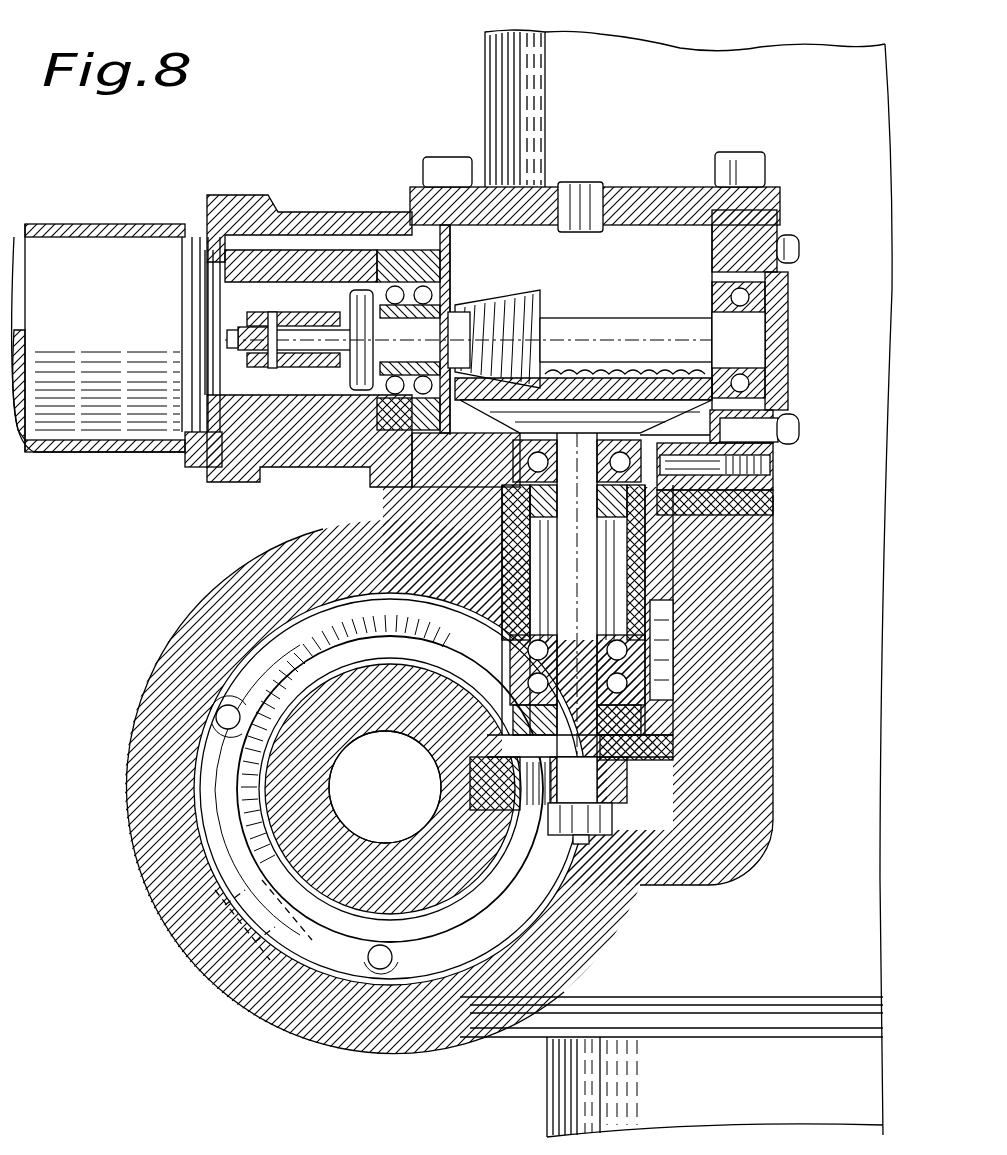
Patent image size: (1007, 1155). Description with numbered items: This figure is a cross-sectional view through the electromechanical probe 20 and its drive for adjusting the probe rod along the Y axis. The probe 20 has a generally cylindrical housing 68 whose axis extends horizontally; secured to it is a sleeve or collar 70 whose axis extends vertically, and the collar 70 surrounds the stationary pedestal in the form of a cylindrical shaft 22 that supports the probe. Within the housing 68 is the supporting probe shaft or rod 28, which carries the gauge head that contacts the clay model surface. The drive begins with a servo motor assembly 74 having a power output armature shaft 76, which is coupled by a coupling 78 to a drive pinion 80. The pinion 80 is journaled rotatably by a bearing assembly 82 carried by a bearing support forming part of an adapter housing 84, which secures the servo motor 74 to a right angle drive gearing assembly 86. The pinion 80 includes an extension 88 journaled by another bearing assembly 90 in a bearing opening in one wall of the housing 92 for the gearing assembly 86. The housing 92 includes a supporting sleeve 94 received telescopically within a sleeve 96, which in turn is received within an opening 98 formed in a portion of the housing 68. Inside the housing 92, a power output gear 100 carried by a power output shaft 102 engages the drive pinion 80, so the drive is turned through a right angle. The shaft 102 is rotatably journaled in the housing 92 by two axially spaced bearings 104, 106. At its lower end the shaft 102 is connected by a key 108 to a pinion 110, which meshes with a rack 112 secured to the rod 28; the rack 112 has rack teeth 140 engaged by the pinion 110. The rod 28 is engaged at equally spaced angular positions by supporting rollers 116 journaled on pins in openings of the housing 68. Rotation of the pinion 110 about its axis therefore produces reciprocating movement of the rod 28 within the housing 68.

The electromechanical probe 20 is at (197, 973).
The cylindrical shaft 22 is at (577, 1077).
The probe shaft or rod 28 is at (282, 793).
The housing 68 is at (730, 850).
The sleeve or collar 70 is at (500, 100).
The servo motor assembly 74 is at (60, 252).
The power output armature shaft 76 is at (235, 325).
The coupling 78 is at (285, 322).
The drive pinion 80 is at (500, 302).
The bearing assembly 82 is at (392, 250).
The adapter housing 84 is at (252, 195).
The right angle drive gearing assembly 86 is at (642, 188).
The extension 88 is at (622, 372).
The bearing assembly 90 is at (770, 302).
The housing 92 is at (775, 215).
The supporting sleeve 94 is at (720, 548).
The sleeve 96 is at (680, 575).
The opening 98 is at (735, 566).
The power output gear 100 is at (626, 362).
The power output shaft 102 is at (677, 593).
The bearing 104 is at (775, 473).
The bearing 106 is at (660, 670).
The key 108 is at (433, 743).
The pinion 110 is at (640, 790).
The rack 112 is at (468, 790).
The supporting rollers 116 is at (290, 893).
The rack teeth 140 is at (603, 883).